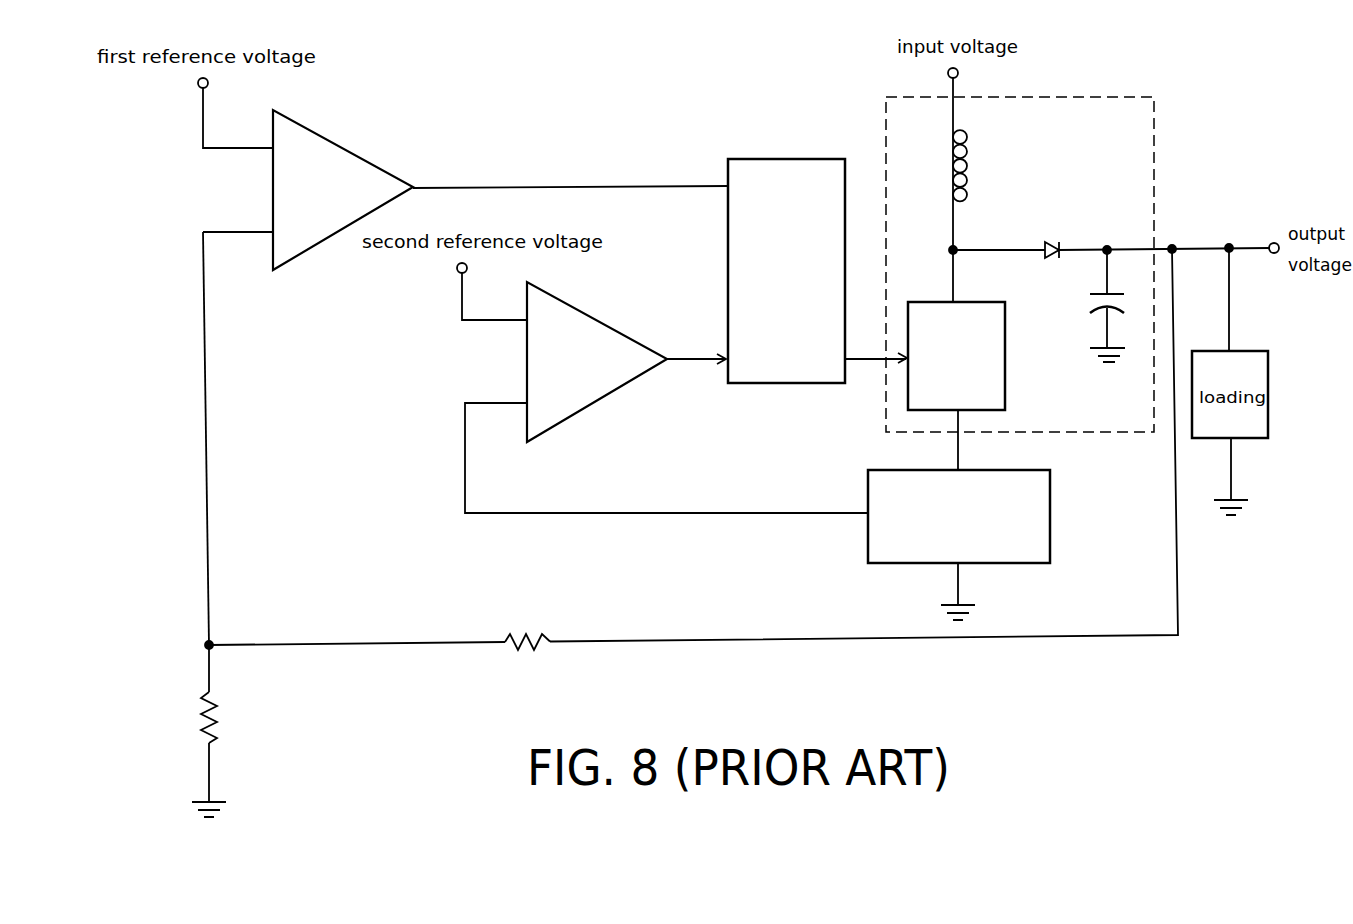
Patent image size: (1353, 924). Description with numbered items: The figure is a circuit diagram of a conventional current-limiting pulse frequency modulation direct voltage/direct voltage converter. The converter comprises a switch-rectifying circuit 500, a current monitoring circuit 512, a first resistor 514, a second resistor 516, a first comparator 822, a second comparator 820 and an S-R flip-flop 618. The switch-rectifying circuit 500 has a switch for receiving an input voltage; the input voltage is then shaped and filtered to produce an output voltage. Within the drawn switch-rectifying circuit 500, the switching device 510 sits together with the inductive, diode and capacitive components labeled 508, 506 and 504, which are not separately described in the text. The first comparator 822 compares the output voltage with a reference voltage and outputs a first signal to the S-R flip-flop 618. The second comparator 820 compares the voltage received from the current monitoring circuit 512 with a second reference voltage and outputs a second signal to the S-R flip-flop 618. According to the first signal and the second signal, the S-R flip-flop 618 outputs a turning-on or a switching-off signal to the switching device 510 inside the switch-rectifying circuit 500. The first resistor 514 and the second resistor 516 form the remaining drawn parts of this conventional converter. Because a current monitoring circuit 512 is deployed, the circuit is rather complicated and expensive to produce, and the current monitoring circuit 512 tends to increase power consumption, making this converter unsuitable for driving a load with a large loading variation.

The switch-rectifying circuit 500 is at (1156, 104).
The capacitor 504 is at (1118, 282).
The diode 506 is at (1045, 240).
The inductor 508 is at (968, 170).
The switching device 510 is at (1007, 352).
The current monitoring circuit 512 is at (1052, 513).
The first resistor 514 is at (538, 655).
The second resistor 516 is at (218, 722).
The S-R flip-flop 618 is at (797, 158).
The second comparator 820 is at (598, 318).
The first comparator 822 is at (347, 147).